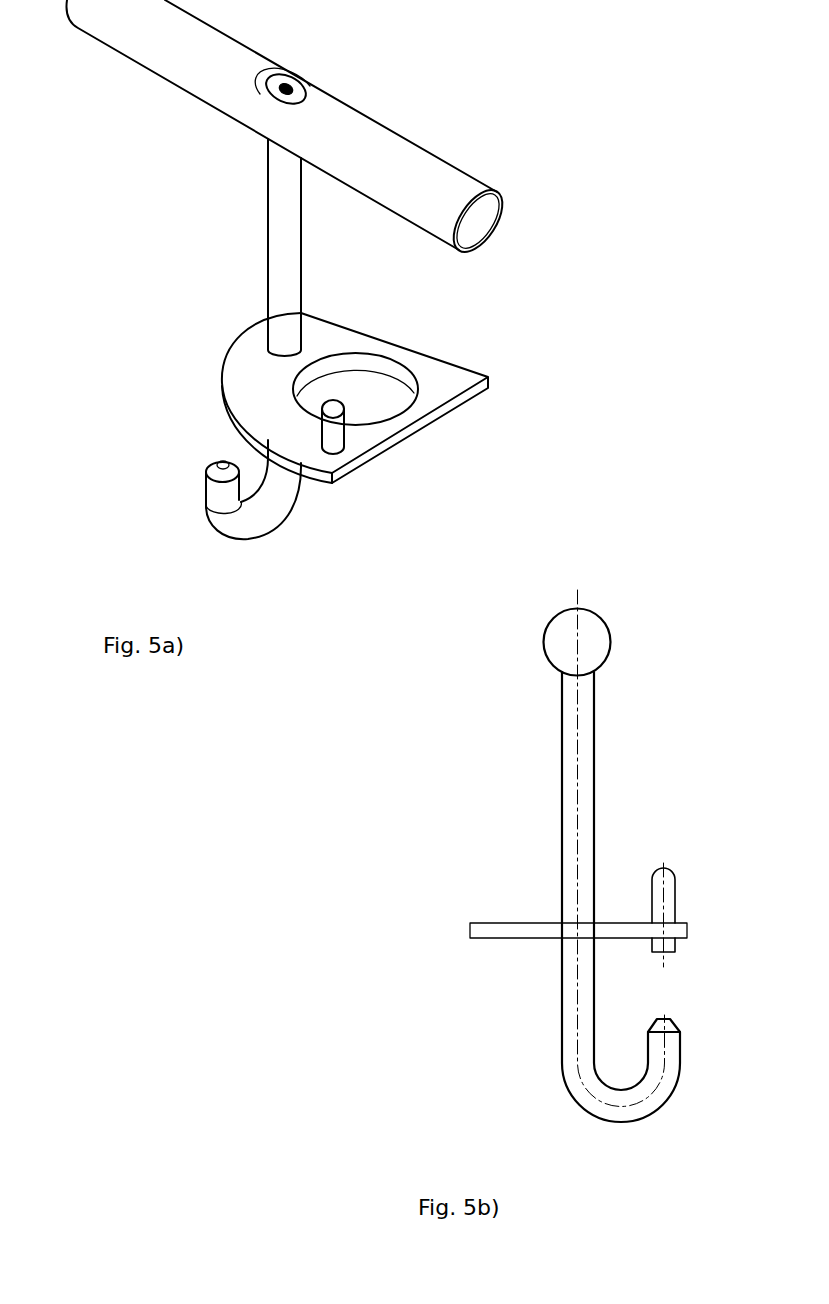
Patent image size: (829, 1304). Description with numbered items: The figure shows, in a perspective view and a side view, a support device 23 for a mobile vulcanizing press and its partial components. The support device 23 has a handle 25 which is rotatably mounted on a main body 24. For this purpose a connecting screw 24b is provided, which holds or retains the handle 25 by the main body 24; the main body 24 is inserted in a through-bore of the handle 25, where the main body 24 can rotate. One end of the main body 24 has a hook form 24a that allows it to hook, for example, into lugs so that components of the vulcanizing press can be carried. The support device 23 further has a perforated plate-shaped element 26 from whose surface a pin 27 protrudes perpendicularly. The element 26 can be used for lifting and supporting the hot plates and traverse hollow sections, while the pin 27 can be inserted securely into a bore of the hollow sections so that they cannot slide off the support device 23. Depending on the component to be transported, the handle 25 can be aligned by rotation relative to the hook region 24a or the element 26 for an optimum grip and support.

In FIG. 5A, the support device 23 is at (440, 142).
In FIG. 5A, the main body 24 is at (287, 278).
In FIG. 5B, the main body 24 is at (575, 1077).
In FIG. 5A, the hook form 24a is at (240, 522).
In FIG. 5A, the connecting screw 24b is at (298, 90).
In FIG. 5A, the handle 25 is at (473, 223).
In FIG. 5B, the handle 25 is at (562, 645).
In FIG. 5A, the perforated plate-shaped element 26 is at (441, 378).
In FIG. 5A, the pin 27 is at (332, 433).
In FIG. 5B, the pin 27 is at (676, 888).